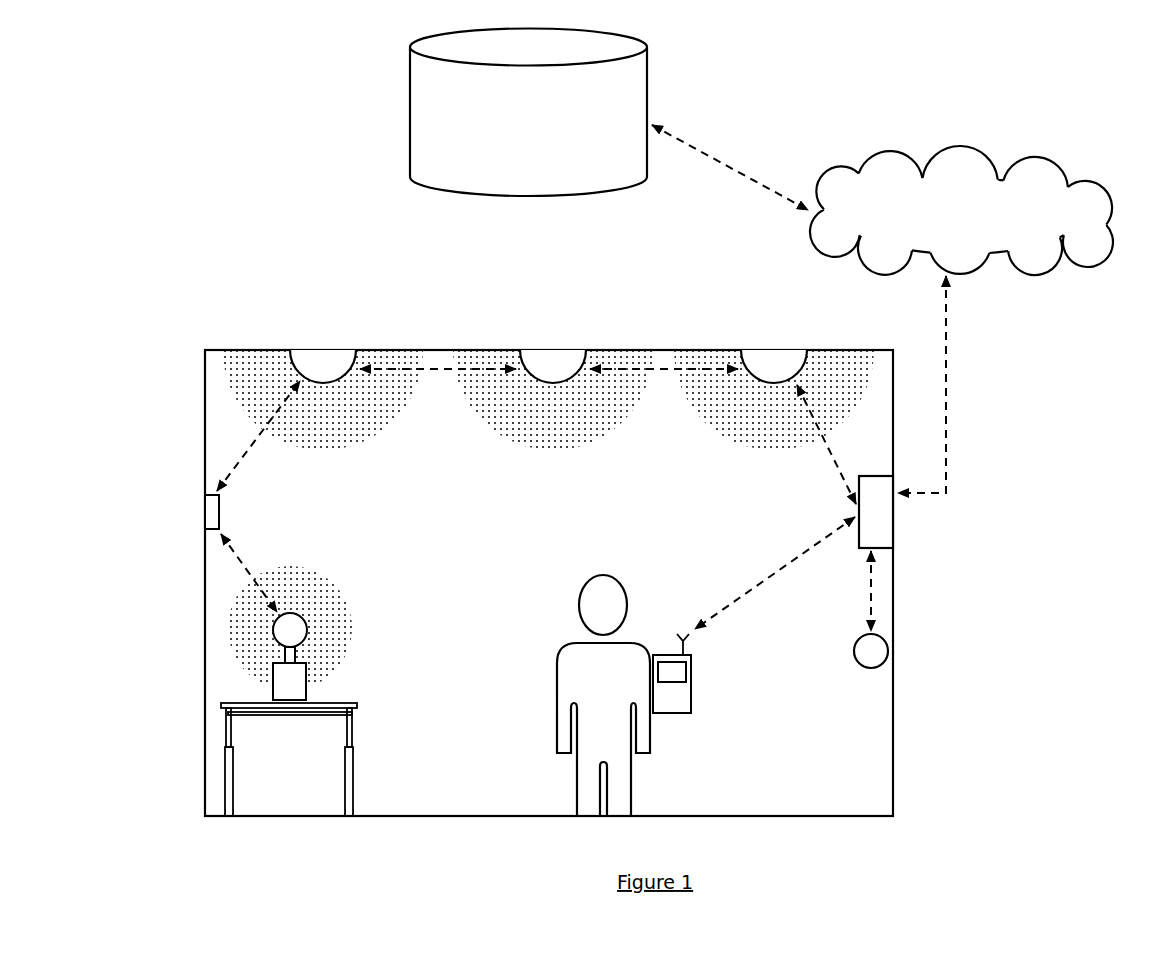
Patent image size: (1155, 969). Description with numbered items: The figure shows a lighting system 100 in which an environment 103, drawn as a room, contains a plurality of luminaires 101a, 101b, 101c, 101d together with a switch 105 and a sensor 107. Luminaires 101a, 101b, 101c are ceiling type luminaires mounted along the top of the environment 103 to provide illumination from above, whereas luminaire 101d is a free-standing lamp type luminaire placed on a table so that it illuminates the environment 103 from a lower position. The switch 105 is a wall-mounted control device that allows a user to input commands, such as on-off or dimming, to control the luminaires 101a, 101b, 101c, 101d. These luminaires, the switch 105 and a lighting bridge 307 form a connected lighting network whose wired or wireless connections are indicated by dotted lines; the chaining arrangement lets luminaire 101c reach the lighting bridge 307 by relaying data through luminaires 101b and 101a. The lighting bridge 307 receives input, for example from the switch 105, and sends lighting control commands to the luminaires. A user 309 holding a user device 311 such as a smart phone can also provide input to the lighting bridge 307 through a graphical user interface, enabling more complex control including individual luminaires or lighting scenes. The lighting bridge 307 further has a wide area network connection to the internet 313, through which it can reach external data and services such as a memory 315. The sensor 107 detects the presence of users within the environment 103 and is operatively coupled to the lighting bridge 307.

The lighting system 100 is at (212, 140).
The luminaire 101a is at (757, 350).
The luminaire 101b is at (554, 350).
The luminaire 101c is at (324, 350).
The luminaire 101d is at (297, 614).
The environment 103 is at (893, 735).
The switch 105 is at (220, 510).
The sensor 107 is at (858, 662).
The lighting bridge 307 is at (895, 518).
The user 309 is at (560, 657).
The user device 311 is at (693, 660).
The internet 313 is at (961, 210).
The memory 315 is at (528, 112).